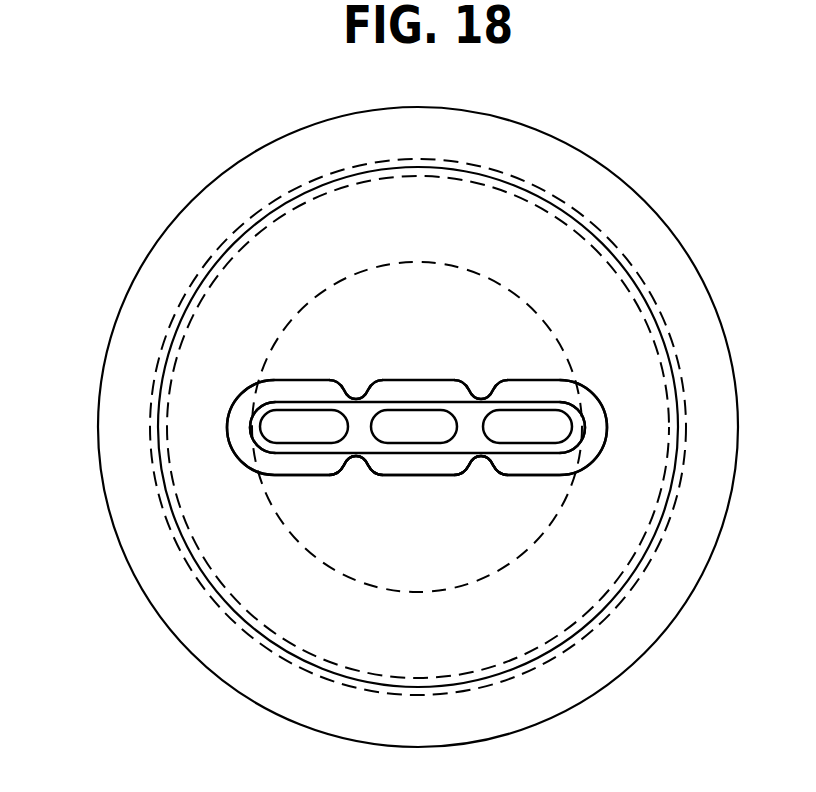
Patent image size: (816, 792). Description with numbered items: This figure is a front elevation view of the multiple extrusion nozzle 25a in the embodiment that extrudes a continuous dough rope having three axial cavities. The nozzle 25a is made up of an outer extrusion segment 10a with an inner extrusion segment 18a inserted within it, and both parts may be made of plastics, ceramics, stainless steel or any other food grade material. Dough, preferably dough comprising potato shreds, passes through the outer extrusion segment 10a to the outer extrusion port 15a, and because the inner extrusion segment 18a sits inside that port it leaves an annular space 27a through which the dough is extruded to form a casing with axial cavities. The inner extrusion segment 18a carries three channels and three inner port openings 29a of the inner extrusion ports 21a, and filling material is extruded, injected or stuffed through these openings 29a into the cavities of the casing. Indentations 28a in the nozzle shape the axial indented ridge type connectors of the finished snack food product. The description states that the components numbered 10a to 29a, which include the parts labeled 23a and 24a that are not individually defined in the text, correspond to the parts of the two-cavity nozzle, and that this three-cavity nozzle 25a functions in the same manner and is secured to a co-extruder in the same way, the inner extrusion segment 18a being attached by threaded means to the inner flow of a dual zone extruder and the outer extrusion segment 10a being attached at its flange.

The outer extrusion segment 10a is at (612, 122).
The multiple extrusion nozzle 25a is at (673, 192).
The outer extrusion port 15a is at (290, 477).
The raised plate 23a is at (605, 447).
The annular space 27a is at (593, 437).
The inner extrusion segment 18a is at (352, 423).
The right end wall 24a is at (585, 422).
The inner extrusion port 21a is at (250, 412).
The inner port opening 29a is at (298, 427).
The indentation 28a is at (480, 398).